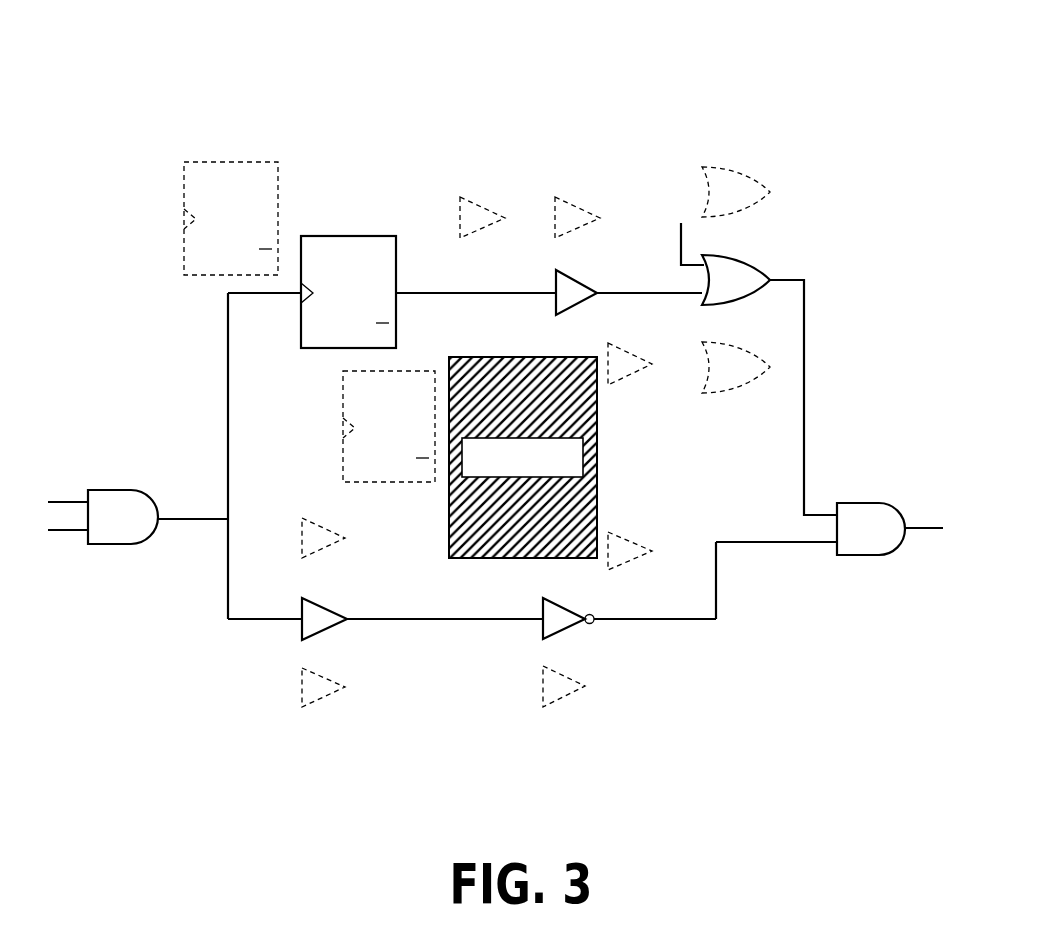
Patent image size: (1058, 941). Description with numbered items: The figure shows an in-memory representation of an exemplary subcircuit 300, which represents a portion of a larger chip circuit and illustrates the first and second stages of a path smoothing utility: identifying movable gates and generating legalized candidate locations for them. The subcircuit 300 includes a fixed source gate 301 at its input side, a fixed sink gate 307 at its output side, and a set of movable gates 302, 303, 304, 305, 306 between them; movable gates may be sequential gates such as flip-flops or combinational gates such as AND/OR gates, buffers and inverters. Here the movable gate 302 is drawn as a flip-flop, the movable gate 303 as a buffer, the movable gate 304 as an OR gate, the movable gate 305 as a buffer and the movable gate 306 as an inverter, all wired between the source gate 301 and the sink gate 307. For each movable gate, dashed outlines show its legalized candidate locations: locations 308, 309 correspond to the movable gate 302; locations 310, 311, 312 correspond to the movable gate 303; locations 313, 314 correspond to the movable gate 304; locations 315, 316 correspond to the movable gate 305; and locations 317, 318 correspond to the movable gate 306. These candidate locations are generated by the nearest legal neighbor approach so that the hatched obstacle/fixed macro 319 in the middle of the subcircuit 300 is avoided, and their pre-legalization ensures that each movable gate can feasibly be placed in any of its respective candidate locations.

The subcircuit 300 is at (682, 81).
The fixed source gate 301 is at (120, 491).
The movable gate 302 is at (354, 235).
The movable gate 303 is at (582, 283).
The movable gate 304 is at (762, 270).
The movable gate 305 is at (316, 629).
The movable gate 306 is at (560, 630).
The fixed sink gate 307 is at (871, 506).
The legalized candidate location 308 is at (343, 428).
The legalized candidate location 309 is at (231, 162).
The legalized candidate location 310 is at (470, 203).
The legalized candidate location 311 is at (590, 214).
The legalized candidate location 312 is at (620, 350).
The legalized candidate location 313 is at (762, 188).
The legalized candidate location 314 is at (765, 372).
The legalized candidate location 315 is at (325, 545).
The legalized candidate location 316 is at (325, 695).
The legalized candidate location 317 is at (628, 552).
The legalized candidate location 318 is at (568, 690).
The obstacle/fixed macro 319 is at (598, 455).